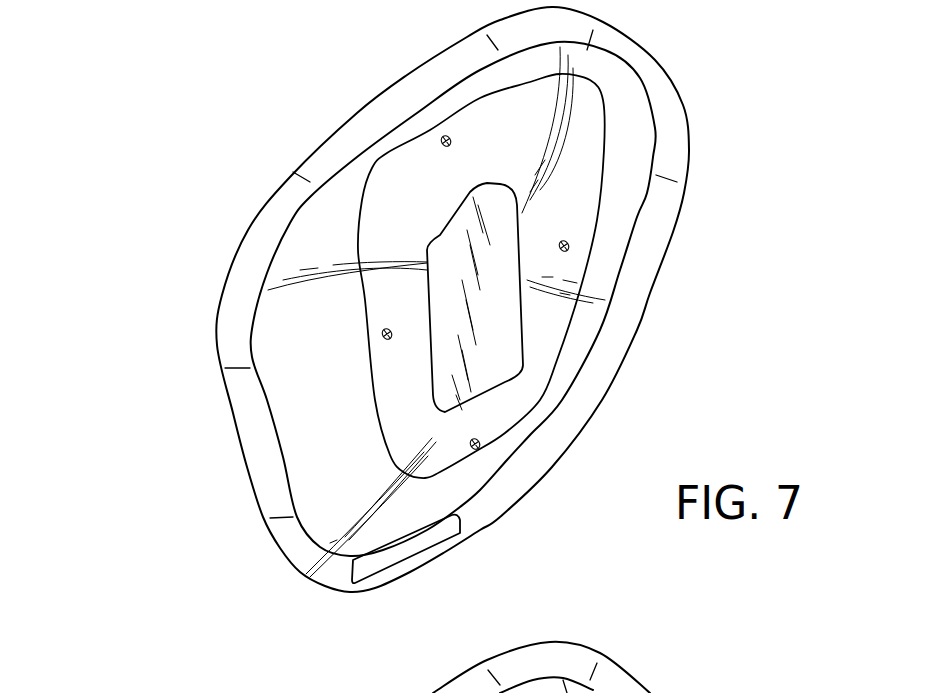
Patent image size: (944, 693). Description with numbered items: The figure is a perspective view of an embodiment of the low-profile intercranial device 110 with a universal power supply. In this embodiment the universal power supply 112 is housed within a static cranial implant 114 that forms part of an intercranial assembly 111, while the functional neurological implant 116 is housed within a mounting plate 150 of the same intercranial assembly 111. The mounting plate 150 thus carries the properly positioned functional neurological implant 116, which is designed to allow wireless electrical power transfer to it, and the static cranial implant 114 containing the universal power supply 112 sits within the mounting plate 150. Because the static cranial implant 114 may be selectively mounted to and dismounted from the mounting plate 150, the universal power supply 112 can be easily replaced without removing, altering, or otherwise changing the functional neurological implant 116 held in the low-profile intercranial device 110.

The low-profile intercranial device 110 is at (728, 103).
The intercranial assembly 111 is at (153, 450).
The universal power supply 112 is at (510, 350).
The static cranial implant 114 is at (620, 213).
The functional neurological implant 116 is at (383, 572).
The mounting plate 150 is at (287, 197).